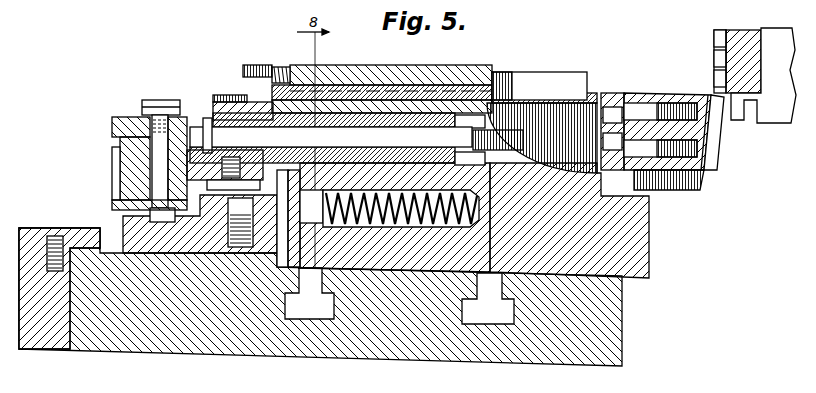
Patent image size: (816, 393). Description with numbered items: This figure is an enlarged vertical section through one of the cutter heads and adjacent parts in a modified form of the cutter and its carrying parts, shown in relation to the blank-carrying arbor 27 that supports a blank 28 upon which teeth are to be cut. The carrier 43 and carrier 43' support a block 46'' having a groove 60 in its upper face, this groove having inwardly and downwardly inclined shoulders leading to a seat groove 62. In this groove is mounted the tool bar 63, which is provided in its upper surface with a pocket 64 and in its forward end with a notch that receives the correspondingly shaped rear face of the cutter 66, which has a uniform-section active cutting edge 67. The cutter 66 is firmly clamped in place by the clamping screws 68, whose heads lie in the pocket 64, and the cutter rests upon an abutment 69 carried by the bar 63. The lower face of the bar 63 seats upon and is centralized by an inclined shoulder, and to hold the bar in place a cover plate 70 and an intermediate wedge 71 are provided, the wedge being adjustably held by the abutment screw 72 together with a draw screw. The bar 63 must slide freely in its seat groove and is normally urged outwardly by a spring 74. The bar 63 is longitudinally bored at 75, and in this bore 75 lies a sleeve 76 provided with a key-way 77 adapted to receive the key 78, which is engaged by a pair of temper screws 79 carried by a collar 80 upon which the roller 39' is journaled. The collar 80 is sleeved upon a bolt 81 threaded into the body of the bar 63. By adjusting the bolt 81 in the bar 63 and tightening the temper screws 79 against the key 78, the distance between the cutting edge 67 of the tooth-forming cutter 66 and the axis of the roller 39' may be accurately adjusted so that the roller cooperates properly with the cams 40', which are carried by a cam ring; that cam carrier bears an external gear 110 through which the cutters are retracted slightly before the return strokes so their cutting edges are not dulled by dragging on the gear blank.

The blank-carrying arbor 27 is at (763, 75).
The blank 28 is at (714, 40).
The roller 39' is at (163, 170).
The cam 40' is at (156, 142).
The carrier 43 is at (148, 272).
The carrier 43' is at (347, 297).
The block 46'' is at (601, 220).
The groove 60 is at (618, 198).
The groove 62 is at (295, 215).
The tool bar 63 is at (570, 120).
The pocket 64 is at (585, 130).
The cutter 66 is at (707, 142).
The active cutting edge 67 is at (716, 133).
The clamping screws 68 is at (646, 105).
The abutment 69 is at (703, 186).
The cover plate 70 is at (434, 62).
The wedge 71 is at (383, 88).
The abutment screw 72 is at (249, 63).
The spring 74 is at (405, 228).
The bore 75 is at (515, 77).
The sleeve 76 is at (440, 118).
The key-way 77 is at (360, 65).
The key 78 is at (283, 67).
The temper screws 79 is at (221, 96).
The collar 80 is at (215, 108).
The bolt 81 is at (356, 138).
The external gear 110 is at (112, 155).